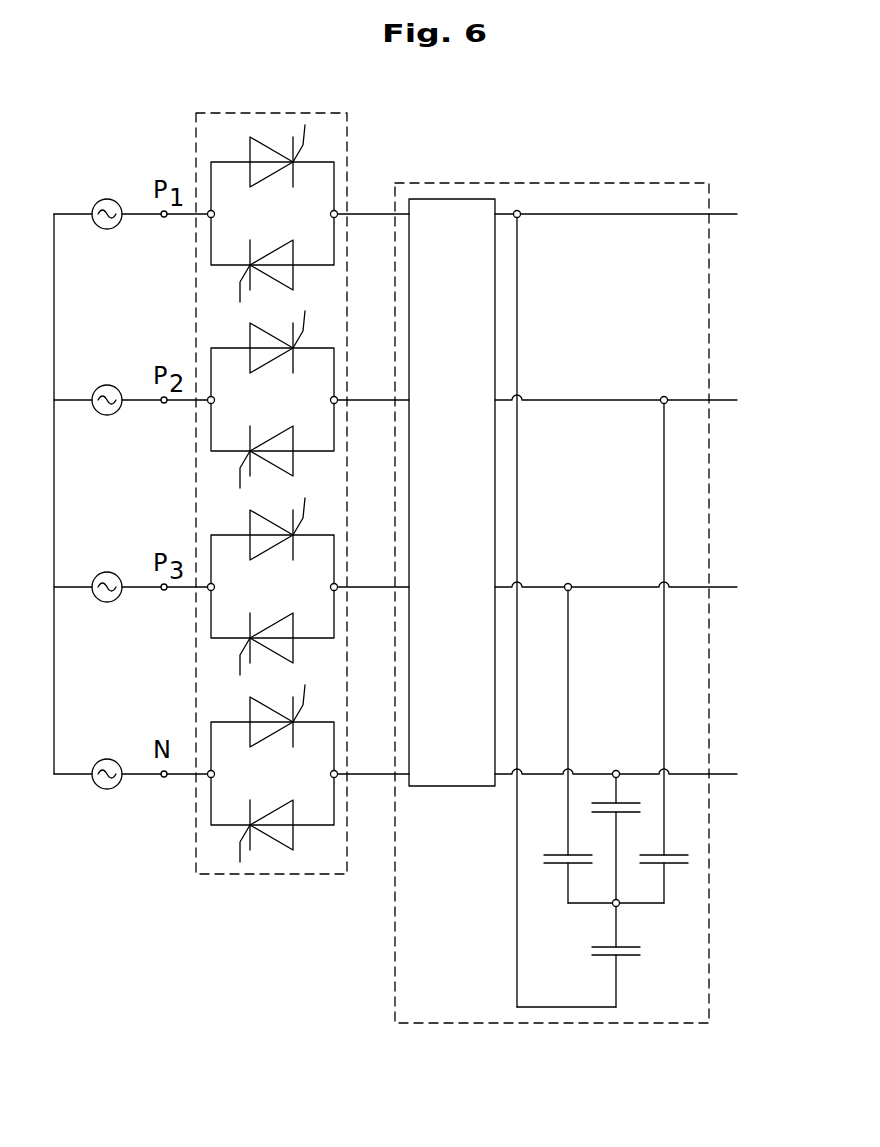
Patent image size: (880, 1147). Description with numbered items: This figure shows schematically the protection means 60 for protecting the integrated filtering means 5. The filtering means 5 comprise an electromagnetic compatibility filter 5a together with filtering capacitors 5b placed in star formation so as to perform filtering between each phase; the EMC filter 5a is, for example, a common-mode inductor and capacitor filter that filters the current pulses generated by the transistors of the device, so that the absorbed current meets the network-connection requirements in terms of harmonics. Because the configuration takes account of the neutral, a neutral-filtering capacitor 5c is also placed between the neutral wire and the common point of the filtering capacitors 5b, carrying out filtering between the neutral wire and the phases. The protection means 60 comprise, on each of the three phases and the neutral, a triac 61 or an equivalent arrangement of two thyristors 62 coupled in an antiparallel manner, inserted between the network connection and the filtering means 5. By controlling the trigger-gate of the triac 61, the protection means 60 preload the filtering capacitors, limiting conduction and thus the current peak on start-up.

The filtering means 5 is at (552, 183).
The electromagnetic compatibility (EMC) filter 5a is at (426, 786).
The filtering capacitors 5b is at (560, 866).
The neutral-filtering capacitor 5c is at (608, 814).
The protection means 60 is at (262, 113).
The triac 61 is at (320, 152).
The thyristors 62 is at (268, 172).